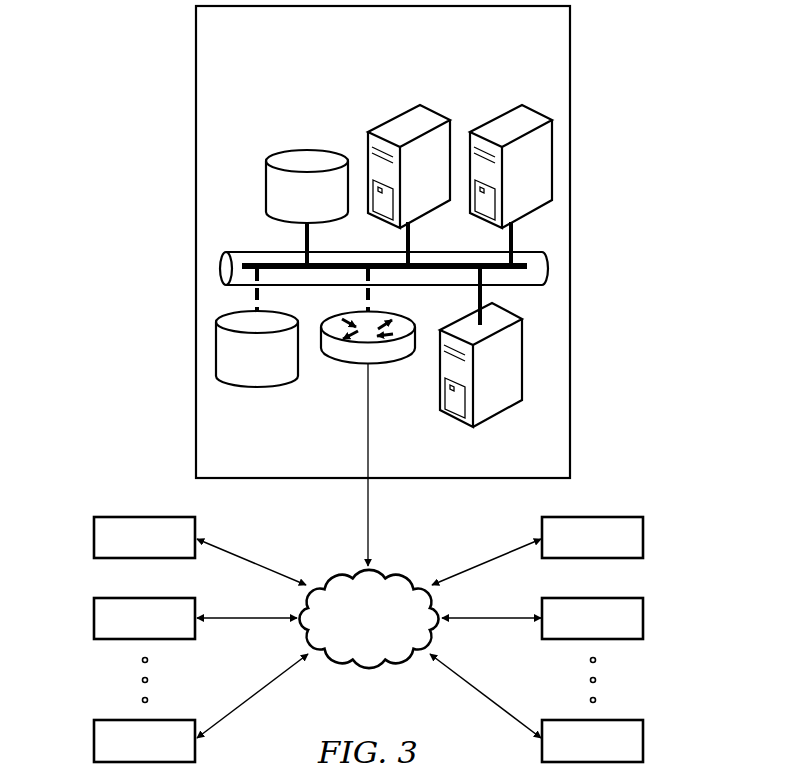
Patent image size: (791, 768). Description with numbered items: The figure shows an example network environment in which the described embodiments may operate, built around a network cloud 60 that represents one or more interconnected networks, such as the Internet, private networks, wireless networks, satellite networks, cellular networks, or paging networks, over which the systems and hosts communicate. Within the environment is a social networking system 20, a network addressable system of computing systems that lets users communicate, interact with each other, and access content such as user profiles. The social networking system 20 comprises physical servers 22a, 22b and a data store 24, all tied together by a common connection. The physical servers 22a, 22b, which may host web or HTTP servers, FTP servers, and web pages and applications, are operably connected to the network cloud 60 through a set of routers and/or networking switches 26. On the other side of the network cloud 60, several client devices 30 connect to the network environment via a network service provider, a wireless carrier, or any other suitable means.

The social networking system 20 is at (186, 120).
The physical server 22a is at (497, 413).
The physical server 22b is at (427, 117).
The data store 24 is at (297, 150).
The routers and/or networking switches 26 is at (378, 365).
The client device 30 is at (93, 537).
The network cloud 60 is at (366, 671).